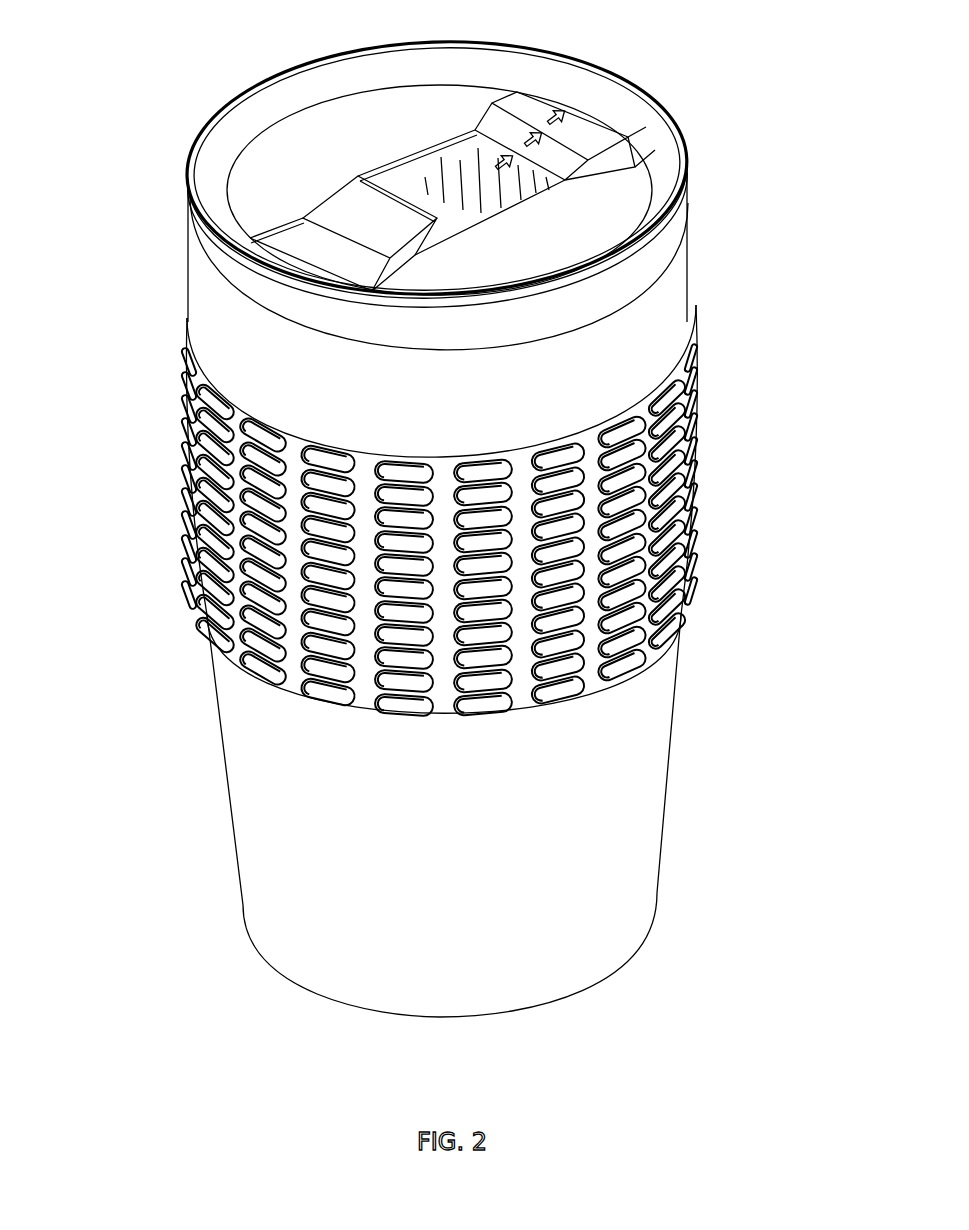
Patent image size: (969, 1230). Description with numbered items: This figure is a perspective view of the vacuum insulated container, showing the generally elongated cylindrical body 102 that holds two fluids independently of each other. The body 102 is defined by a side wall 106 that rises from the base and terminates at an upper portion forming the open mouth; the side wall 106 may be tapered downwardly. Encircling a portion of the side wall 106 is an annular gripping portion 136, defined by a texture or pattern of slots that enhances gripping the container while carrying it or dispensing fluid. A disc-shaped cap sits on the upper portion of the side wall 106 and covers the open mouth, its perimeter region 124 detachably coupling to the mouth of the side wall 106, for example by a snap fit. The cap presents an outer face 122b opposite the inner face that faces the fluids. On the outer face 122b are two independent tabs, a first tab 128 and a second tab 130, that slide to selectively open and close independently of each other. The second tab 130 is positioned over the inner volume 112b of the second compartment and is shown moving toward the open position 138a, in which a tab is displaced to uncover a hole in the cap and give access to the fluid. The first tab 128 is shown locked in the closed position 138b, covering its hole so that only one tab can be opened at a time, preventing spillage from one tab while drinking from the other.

The body 102 is at (421, 510).
The side wall 106 is at (433, 811).
The inner volume of the second compartment 112b is at (437, 162).
The outer face 122b is at (439, 190).
The perimeter region 124 is at (691, 165).
The first tab 128 is at (340, 216).
The second tab 130 is at (400, 149).
The annular gripping portion 136 is at (192, 488).
The open position 138a is at (500, 88).
The closed position 138b is at (305, 194).